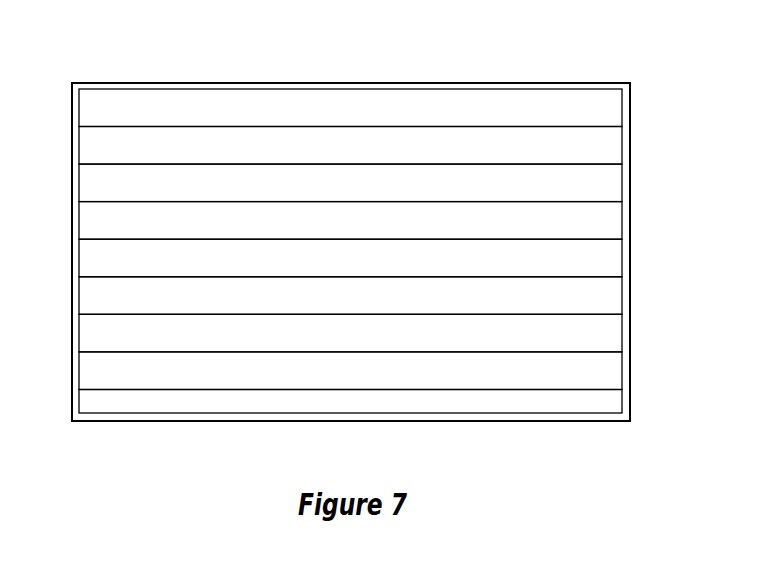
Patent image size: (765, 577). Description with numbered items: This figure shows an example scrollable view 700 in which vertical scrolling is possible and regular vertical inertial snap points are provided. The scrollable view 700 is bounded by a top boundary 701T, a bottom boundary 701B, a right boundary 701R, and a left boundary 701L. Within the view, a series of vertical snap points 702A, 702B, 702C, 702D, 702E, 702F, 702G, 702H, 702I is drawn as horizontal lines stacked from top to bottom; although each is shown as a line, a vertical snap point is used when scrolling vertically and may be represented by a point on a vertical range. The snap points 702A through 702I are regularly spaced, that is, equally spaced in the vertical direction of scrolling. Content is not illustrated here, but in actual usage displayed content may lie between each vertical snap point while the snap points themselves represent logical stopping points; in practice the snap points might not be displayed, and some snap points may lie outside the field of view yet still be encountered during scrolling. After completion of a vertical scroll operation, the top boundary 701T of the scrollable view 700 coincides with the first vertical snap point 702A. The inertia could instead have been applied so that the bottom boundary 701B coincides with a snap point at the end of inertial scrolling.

The scrollable view 700 is at (365, 38).
The top boundary 701T is at (446, 82).
The bottom boundary 701B is at (364, 421).
The left boundary 701L is at (72, 231).
The right boundary 701R is at (632, 145).
The vertical snap point 702A is at (636, 85).
The vertical snap point 702B is at (636, 126).
The vertical snap point 702C is at (636, 164).
The vertical snap point 702D is at (636, 202).
The vertical snap point 702E is at (636, 239).
The vertical snap point 702F is at (636, 277).
The vertical snap point 702G is at (636, 314).
The vertical snap point 702H is at (636, 352).
The vertical snap point 702I is at (636, 390).